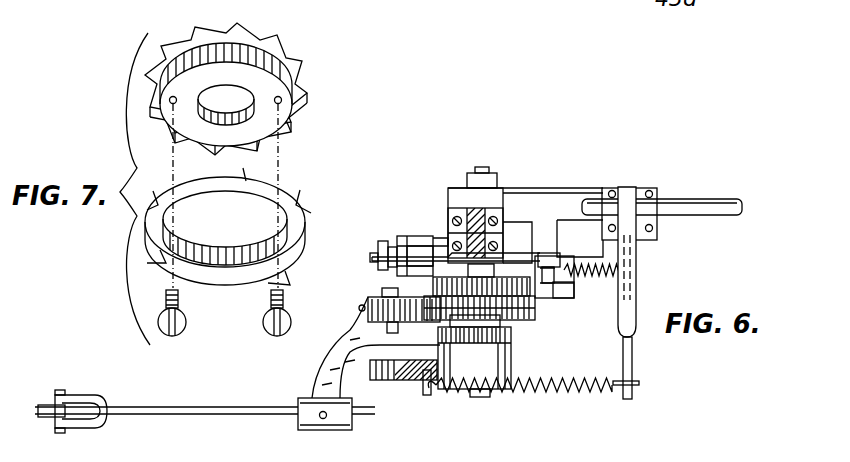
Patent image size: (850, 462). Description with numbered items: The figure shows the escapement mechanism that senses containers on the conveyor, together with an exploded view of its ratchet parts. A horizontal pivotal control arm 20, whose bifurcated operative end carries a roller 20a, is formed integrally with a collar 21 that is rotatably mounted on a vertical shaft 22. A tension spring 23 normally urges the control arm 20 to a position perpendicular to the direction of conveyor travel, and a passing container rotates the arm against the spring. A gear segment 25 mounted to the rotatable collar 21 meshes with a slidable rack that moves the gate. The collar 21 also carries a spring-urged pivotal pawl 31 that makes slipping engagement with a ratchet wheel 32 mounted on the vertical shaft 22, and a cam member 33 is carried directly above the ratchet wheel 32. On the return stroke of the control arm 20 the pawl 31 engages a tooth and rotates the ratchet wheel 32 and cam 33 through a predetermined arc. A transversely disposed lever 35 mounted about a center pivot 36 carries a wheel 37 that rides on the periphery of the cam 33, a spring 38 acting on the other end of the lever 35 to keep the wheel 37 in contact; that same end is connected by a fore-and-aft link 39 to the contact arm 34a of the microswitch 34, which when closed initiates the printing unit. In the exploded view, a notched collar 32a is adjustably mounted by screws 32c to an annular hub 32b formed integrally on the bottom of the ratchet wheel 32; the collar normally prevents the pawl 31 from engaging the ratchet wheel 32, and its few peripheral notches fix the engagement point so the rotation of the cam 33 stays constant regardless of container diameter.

In FIG. 6, the control arm 20 is at (190, 404).
In FIG. 6, the roller 20a is at (40, 406).
In FIG. 6, the collar 21 is at (474, 338).
In FIG. 6, the vertical shaft 22 is at (483, 172).
In FIG. 6, the tension spring 23 is at (540, 389).
In FIG. 6, the gear segment 25 is at (383, 381).
In FIG. 6, the pawl 31 is at (440, 292).
In FIG. 7, the ratchet wheel 32 is at (276, 42).
In FIG. 6, the ratchet wheel 32 is at (529, 300).
In FIG. 7, the notched collar 32a is at (296, 202).
In FIG. 6, the notched collar 32a is at (521, 321).
In FIG. 7, the annular hub 32b is at (266, 95).
In FIG. 7, the screws 32c is at (263, 321).
In FIG. 6, the cam member 33 is at (374, 259).
In FIG. 6, the microswitch 34 is at (418, 237).
In FIG. 6, the contact arm 34a is at (384, 250).
In FIG. 6, the lever 35 is at (556, 270).
In FIG. 6, the center pivot 36 is at (542, 253).
In FIG. 6, the wheel 37 is at (566, 299).
In FIG. 6, the spring 38 is at (596, 276).
In FIG. 6, the fore-and-aft link 39 is at (412, 246).